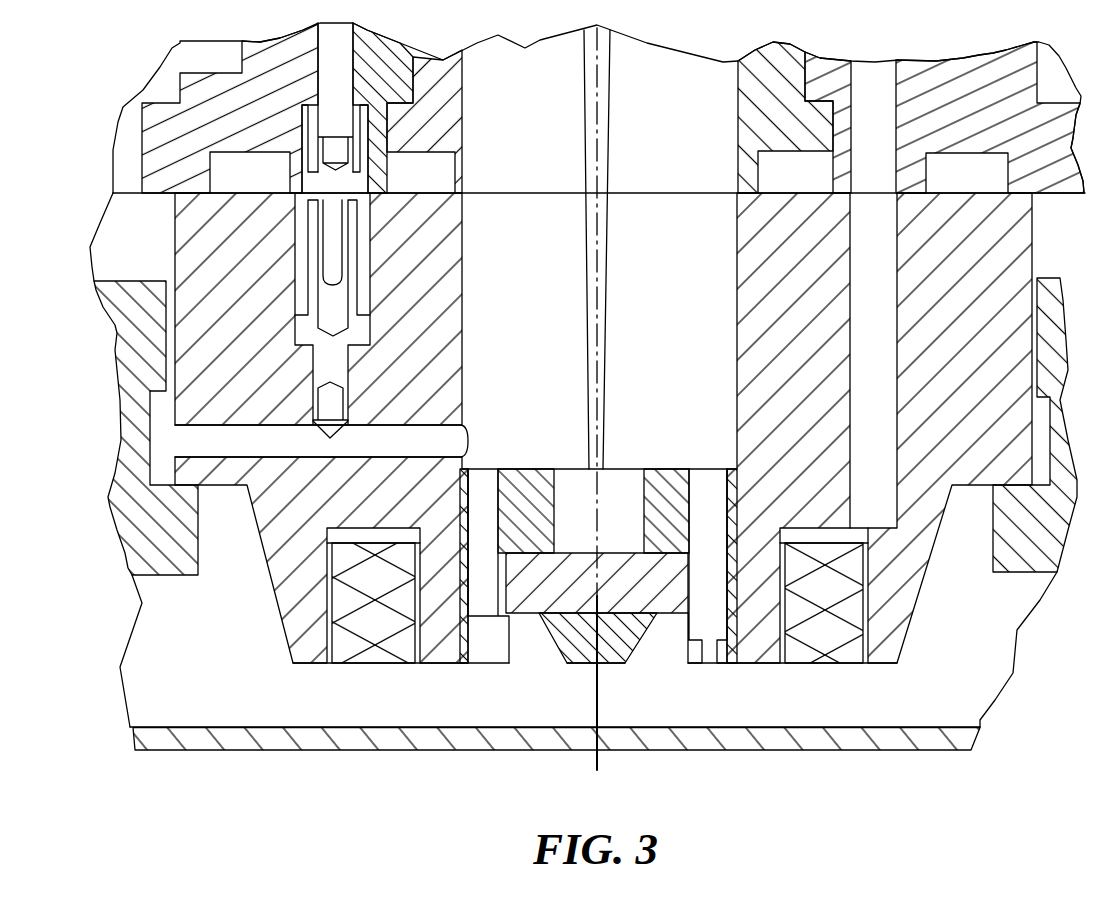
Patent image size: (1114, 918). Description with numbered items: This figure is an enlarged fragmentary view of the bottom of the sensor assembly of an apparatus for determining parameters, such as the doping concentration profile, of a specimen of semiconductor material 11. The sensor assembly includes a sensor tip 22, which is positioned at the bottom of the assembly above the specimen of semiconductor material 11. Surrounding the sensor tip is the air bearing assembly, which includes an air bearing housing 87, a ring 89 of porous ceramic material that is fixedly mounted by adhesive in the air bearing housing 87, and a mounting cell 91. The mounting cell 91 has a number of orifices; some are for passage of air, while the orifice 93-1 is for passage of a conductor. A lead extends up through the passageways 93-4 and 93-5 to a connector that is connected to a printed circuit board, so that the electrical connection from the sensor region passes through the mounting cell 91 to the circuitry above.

The specimen of semiconductor material 11 is at (270, 737).
The sensor tip 22 is at (623, 647).
The air bearing housing 87 is at (203, 355).
The ring of porous ceramic material 89 is at (383, 653).
The mounting cell 91 is at (525, 476).
The orifice 93-1 is at (707, 480).
The passageway 93-4 is at (490, 473).
The passageway 93-5 is at (465, 429).